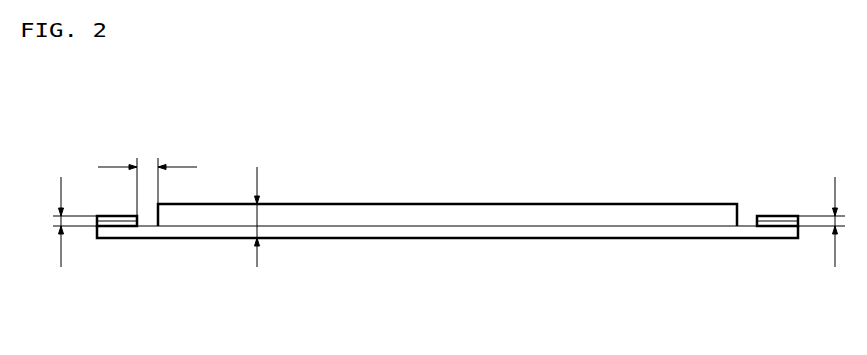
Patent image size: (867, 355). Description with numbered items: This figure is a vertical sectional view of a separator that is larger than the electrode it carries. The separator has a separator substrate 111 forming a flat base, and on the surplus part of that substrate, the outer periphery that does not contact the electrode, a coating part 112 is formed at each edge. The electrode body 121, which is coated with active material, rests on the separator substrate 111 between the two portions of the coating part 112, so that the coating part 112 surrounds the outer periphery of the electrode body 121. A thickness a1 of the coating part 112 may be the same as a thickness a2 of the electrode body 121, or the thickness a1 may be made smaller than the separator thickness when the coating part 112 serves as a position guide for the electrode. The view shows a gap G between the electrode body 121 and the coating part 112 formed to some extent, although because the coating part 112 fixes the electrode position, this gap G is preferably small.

The separator substrate 111 is at (541, 239).
The coating part 112 is at (122, 222).
The electrode body 121 is at (447, 203).
The thickness of the coating part a1 is at (449, 223).
The thickness of the electrode body a2 is at (272, 218).
The gap G is at (149, 177).